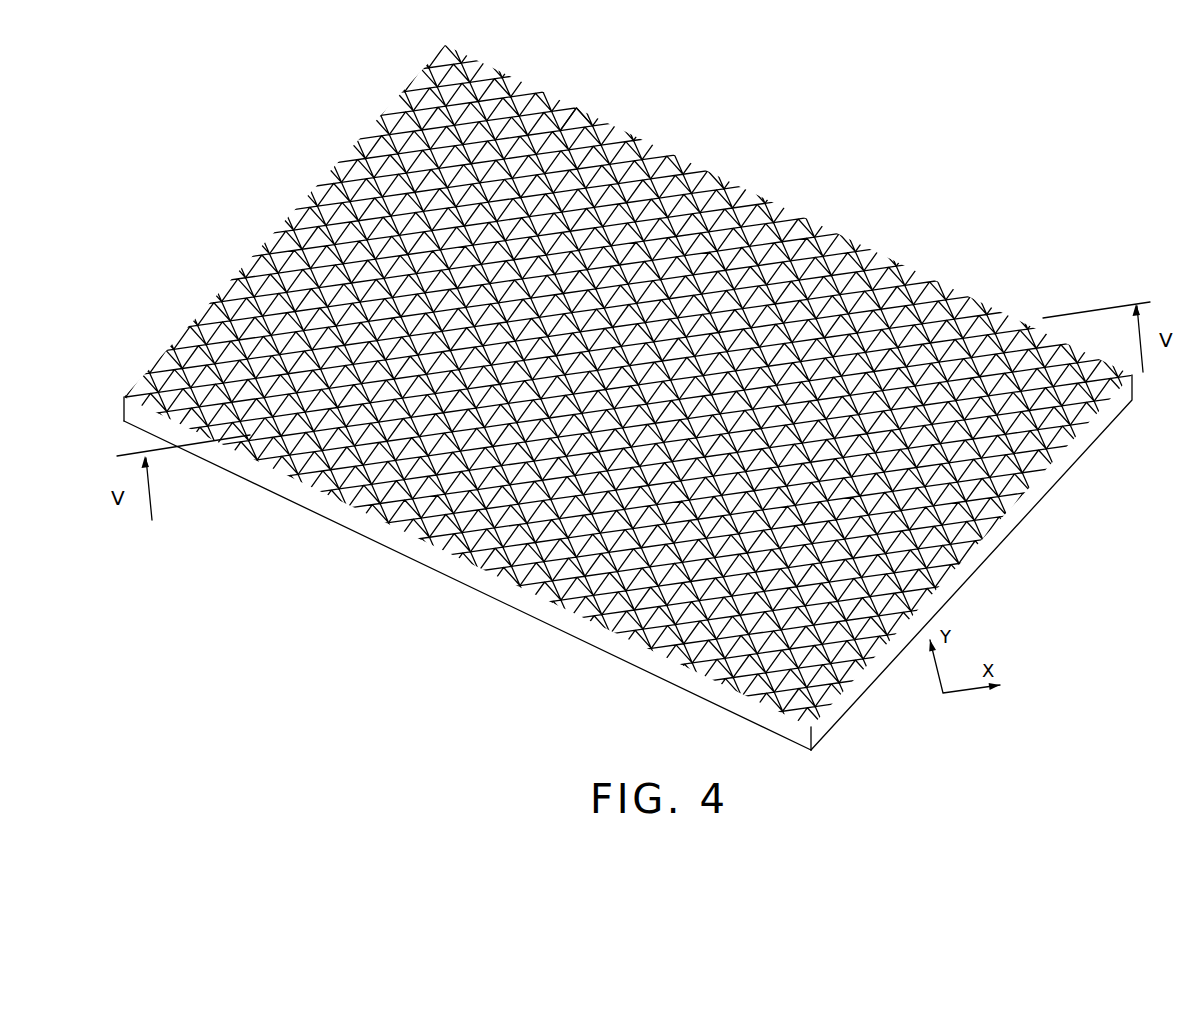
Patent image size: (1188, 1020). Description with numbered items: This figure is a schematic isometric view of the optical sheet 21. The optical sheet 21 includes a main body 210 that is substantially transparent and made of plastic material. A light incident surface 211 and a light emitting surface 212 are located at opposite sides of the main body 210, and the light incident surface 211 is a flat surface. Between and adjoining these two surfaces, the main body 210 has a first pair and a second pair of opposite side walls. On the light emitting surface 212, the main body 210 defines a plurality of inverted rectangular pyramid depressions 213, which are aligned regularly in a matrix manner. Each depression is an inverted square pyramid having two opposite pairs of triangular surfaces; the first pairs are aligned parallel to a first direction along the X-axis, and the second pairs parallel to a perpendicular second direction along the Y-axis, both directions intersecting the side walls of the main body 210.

The optical sheet 21 is at (865, 91).
The main body 210 is at (1023, 513).
The light incident surface 211 is at (350, 546).
The light emitting surface 212 is at (973, 299).
The inverted rectangular pyramid depressions 213 is at (584, 118).